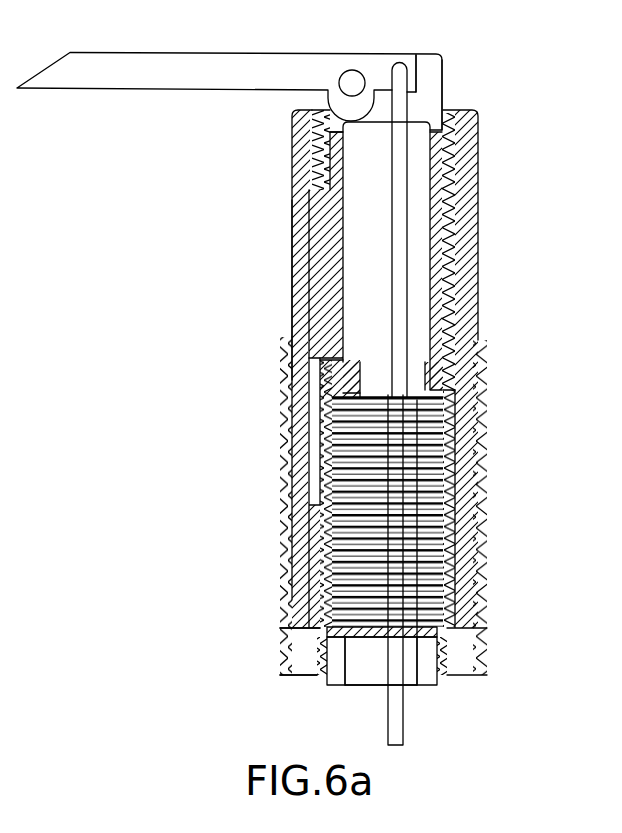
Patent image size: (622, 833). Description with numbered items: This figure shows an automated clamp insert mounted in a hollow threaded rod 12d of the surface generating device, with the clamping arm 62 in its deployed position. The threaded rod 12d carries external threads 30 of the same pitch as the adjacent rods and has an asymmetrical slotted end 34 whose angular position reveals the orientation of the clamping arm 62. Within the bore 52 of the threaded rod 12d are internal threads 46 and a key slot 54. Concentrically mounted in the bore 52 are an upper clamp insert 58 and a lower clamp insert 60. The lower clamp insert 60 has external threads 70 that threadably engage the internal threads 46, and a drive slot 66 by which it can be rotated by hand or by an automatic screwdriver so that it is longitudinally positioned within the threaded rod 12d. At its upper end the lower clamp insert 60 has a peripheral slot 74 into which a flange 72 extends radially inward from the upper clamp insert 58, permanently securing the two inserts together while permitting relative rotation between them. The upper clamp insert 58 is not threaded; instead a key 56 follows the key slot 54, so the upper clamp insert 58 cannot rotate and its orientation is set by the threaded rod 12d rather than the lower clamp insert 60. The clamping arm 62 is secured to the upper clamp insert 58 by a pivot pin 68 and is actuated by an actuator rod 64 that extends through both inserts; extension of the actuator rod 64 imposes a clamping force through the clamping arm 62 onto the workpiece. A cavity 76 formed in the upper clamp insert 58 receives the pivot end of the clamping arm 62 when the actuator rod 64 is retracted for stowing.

The threaded rod 12d is at (283, 292).
The threads 30 is at (285, 515).
The slotted end 34 is at (300, 657).
The internal threads 46 is at (437, 112).
The bore 52 is at (316, 100).
The key slot 54 is at (313, 177).
The key 56 is at (315, 263).
The upper clamp insert 58 is at (428, 58).
The lower clamp insert 60 is at (347, 638).
The clamping arm 62 is at (157, 77).
The actuator rod 64 is at (398, 712).
The drive slot 66 is at (340, 675).
The pivot pin 68 is at (345, 73).
The external threads 70 is at (327, 437).
The flange 72 is at (450, 337).
The peripheral slot 74 is at (338, 363).
The cavity 76 is at (428, 205).